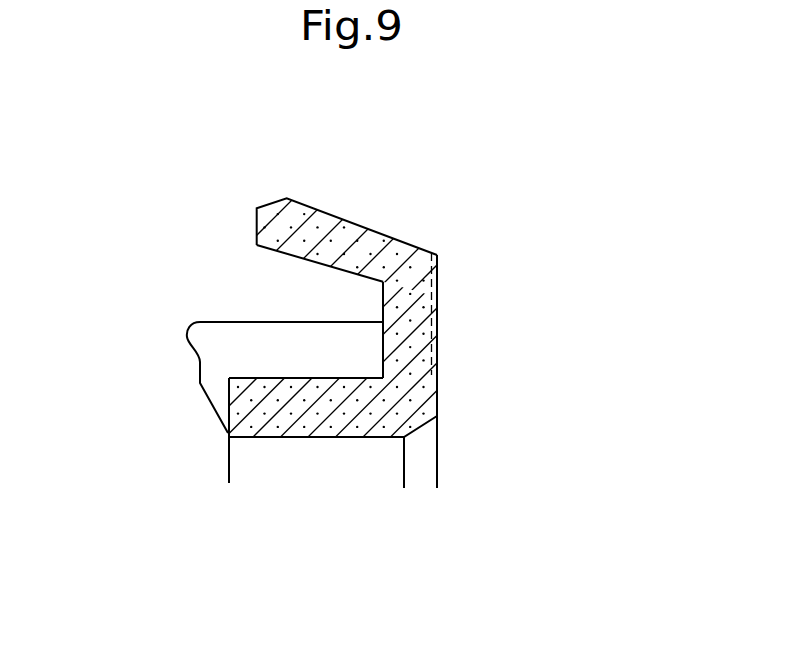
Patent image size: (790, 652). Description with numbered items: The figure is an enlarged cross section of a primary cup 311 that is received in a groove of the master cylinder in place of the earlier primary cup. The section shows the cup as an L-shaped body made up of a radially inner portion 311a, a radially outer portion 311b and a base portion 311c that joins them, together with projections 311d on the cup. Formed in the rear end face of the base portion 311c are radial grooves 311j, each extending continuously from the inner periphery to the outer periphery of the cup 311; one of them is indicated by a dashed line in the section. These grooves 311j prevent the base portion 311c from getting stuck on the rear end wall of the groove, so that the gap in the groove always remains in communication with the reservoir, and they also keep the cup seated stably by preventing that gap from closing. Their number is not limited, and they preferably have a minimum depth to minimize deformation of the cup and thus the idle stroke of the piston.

The primary cup 311 is at (403, 233).
The radially inner portion 311a is at (322, 415).
The radially outer portion 311b is at (318, 232).
The base portion 311c is at (413, 340).
The projections 311d is at (193, 333).
The radial grooves 311j is at (432, 375).